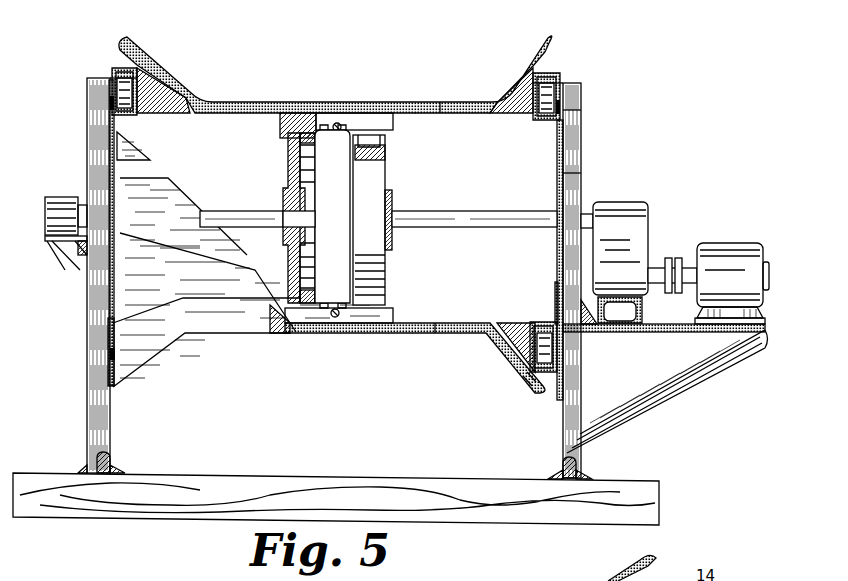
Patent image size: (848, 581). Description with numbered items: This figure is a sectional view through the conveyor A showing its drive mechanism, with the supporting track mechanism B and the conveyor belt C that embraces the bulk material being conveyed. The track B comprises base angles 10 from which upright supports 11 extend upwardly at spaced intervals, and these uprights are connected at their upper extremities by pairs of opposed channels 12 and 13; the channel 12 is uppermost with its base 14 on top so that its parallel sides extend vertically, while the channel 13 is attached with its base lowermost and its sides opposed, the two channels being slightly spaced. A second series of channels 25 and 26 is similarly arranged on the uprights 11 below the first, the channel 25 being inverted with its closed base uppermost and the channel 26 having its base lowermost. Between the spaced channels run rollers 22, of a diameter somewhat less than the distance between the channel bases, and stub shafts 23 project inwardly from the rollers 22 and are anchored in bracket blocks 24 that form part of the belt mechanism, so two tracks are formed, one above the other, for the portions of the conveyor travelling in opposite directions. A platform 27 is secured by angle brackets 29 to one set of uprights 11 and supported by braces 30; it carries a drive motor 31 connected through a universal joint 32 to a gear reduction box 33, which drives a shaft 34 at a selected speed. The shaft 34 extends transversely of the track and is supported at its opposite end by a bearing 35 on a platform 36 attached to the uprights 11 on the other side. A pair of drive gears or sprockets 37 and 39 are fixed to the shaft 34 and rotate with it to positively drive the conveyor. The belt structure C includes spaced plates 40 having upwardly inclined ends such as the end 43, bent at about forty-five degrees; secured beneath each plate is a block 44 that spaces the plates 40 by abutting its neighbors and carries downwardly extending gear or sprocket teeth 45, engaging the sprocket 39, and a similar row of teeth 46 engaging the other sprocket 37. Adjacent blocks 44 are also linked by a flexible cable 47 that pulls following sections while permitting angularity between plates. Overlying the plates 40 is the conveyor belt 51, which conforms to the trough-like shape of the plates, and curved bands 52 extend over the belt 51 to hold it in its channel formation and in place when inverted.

The base angle 10 is at (97, 455).
The upright support 11 is at (87, 352).
The channel 12 is at (118, 66).
The channel 13 is at (110, 103).
The base 14 is at (561, 69).
The roller 22 is at (108, 340).
The stub shaft 23 is at (522, 327).
The bracket block 24 is at (172, 88).
The channel 25 is at (543, 328).
The channel 26 is at (527, 380).
The platform 27 is at (650, 333).
The angle bracket 29 is at (556, 282).
The brace 30 is at (657, 408).
The drive motor 31 is at (732, 260).
The universal joint 32 is at (672, 258).
The gear reduction box 33 is at (648, 202).
The shaft 34 is at (478, 210).
The bearing 35 is at (50, 200).
The platform 36 is at (53, 240).
The drive gear or sprocket 37 is at (288, 158).
The drive gear or sprocket 39 is at (370, 173).
The plate 40 is at (279, 102).
The inclined end 43 is at (148, 62).
The block 44 is at (312, 93).
The gear or sprocket teeth 45 is at (390, 140).
The teeth 46 is at (286, 138).
The cable 47 is at (338, 124).
The conveyor belt 51 is at (229, 102).
The band 52 is at (415, 102).
The conveyor A is at (632, 110).
The track mechanism B is at (577, 173).
The conveyor belt C is at (441, 101).